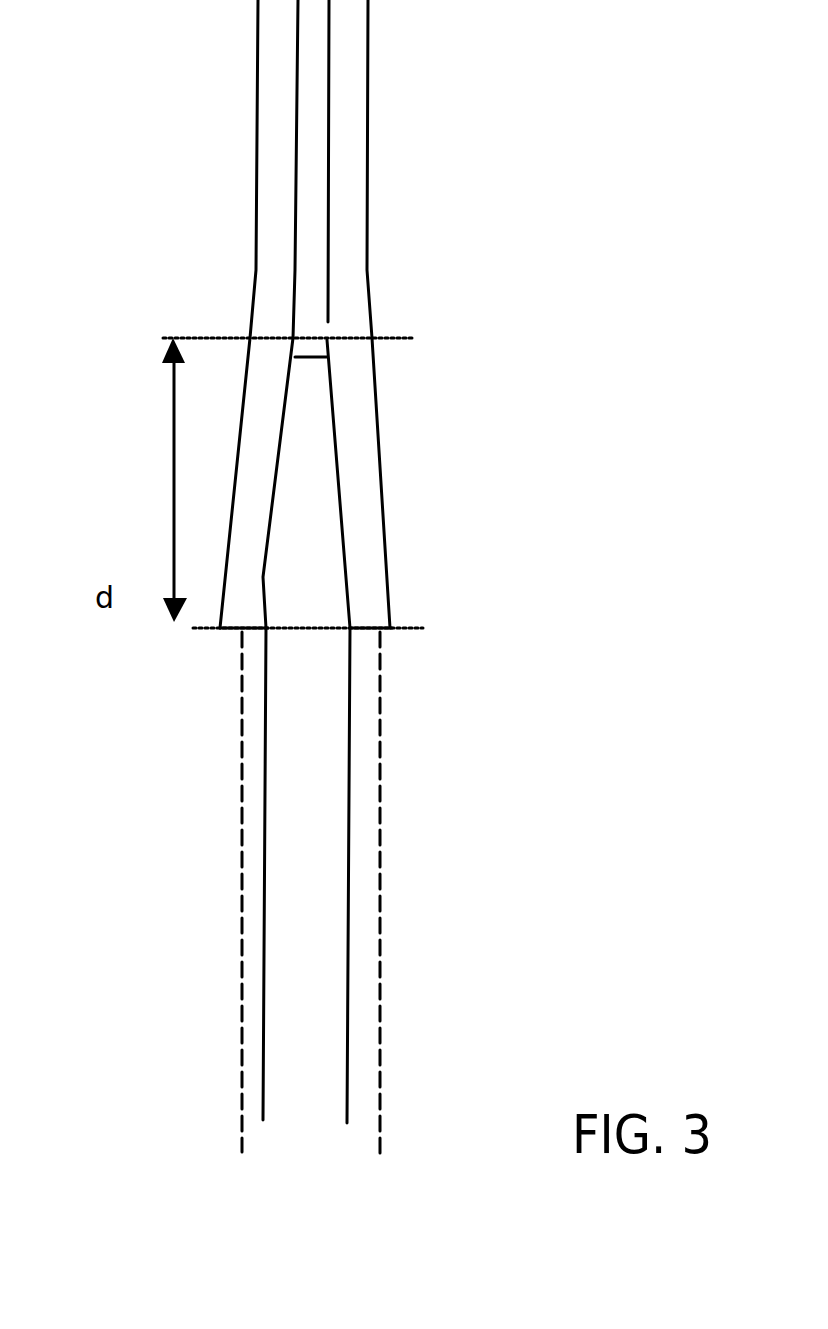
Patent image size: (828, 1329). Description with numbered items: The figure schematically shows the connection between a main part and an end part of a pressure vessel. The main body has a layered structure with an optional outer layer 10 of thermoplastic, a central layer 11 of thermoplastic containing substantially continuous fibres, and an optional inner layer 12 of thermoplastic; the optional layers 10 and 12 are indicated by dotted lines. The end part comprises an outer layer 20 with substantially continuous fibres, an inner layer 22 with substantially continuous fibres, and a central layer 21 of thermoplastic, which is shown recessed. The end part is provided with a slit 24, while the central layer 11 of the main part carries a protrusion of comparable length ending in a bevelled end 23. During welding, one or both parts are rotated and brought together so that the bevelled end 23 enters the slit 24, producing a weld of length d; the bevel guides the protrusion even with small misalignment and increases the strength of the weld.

The outer layer 10 is at (257, 775).
The central layer 11 is at (300, 1110).
The inner layer 12 is at (348, 878).
The outer layer 20 is at (250, 459).
The central layer 21 is at (312, 210).
The inner layer 22 is at (357, 472).
The bevelled end 23 is at (307, 597).
The slit 24 is at (293, 433).